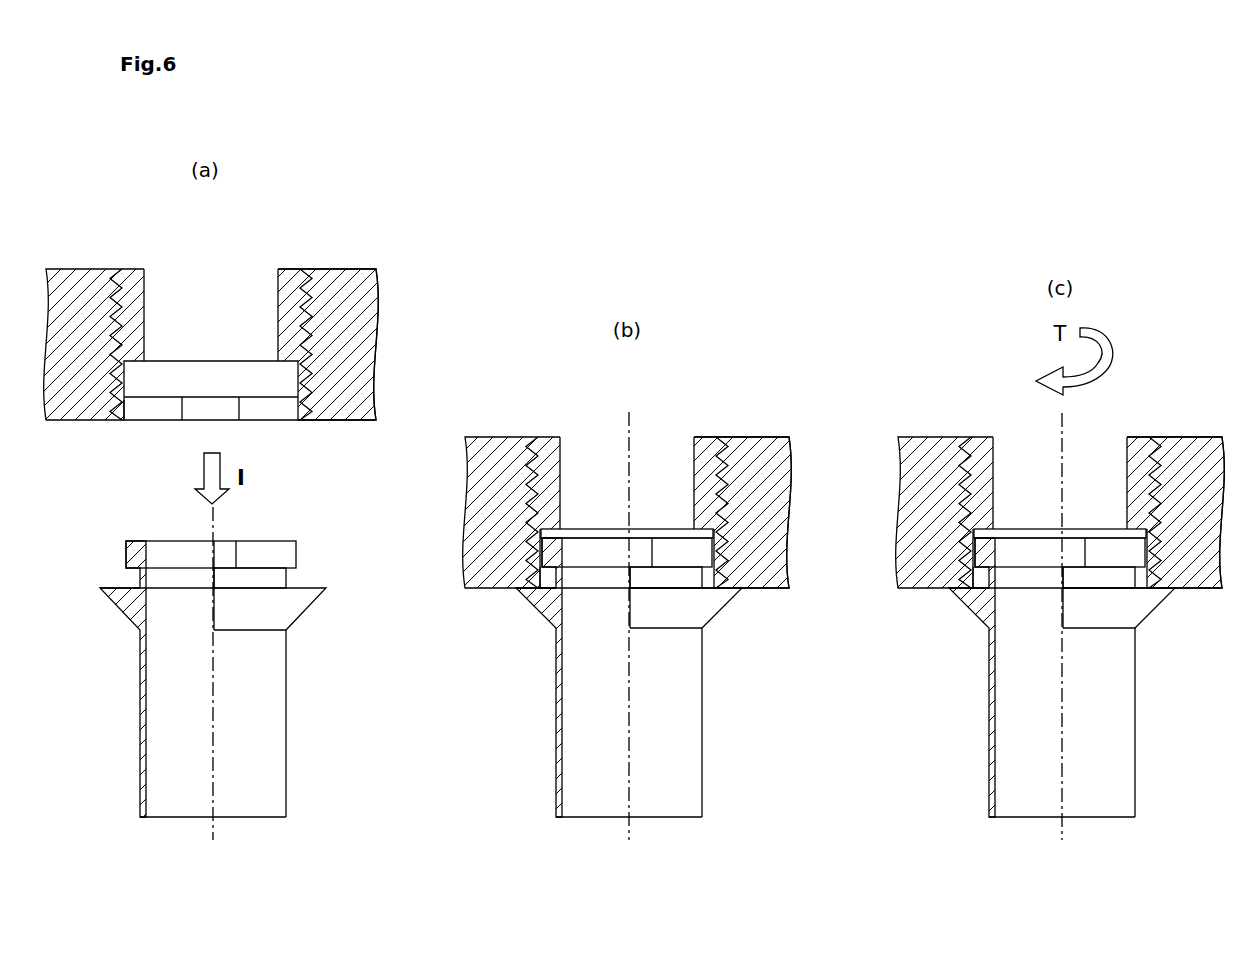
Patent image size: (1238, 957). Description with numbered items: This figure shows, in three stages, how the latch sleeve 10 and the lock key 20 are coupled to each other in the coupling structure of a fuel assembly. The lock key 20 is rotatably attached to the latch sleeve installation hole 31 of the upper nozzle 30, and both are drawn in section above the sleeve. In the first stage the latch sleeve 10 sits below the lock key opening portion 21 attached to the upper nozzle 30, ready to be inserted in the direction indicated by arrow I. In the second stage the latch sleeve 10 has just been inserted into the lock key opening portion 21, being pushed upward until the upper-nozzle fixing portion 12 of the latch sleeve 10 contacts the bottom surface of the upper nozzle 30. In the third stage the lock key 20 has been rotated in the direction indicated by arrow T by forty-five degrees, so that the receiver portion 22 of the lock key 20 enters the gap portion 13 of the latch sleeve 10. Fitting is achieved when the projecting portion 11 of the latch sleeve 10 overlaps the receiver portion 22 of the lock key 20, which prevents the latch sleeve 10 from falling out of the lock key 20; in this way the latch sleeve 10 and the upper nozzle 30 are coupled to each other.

The latch sleeve 10 is at (118, 733).
The projecting portion 11 is at (126, 551).
The upper-nozzle fixing portion 12 is at (297, 609).
The gap portion 13 is at (287, 580).
The lock key 20 is at (133, 269).
The lock key opening portion 21 is at (132, 421).
The receiver portion 22 is at (976, 598).
The upper nozzle 30 is at (342, 278).
The latch sleeve installation hole 31 is at (313, 269).